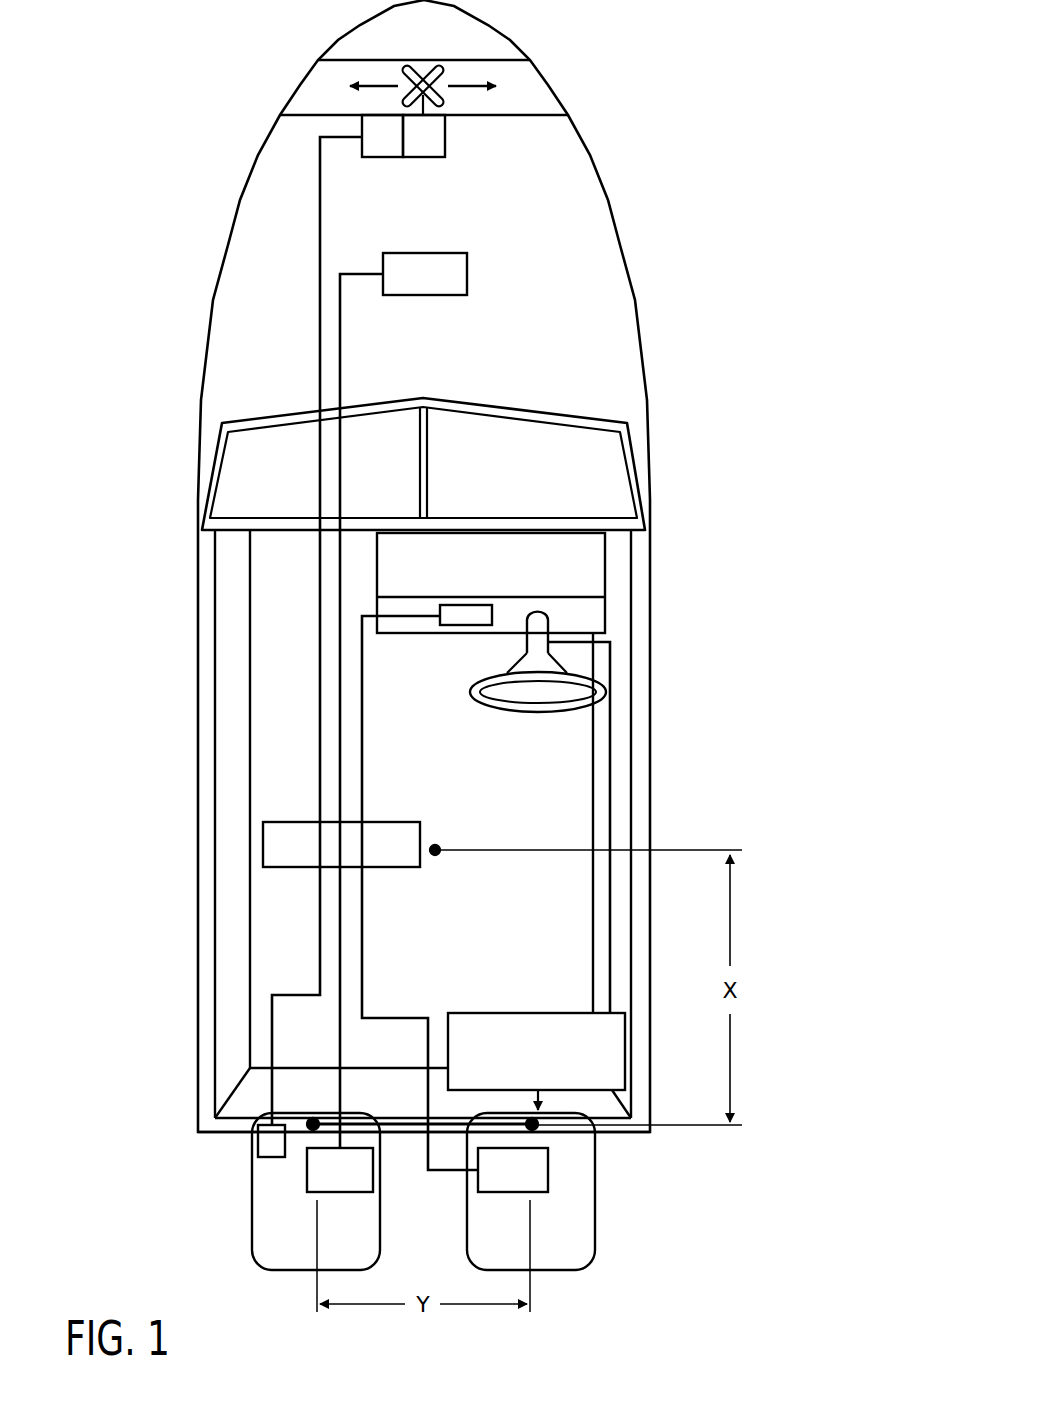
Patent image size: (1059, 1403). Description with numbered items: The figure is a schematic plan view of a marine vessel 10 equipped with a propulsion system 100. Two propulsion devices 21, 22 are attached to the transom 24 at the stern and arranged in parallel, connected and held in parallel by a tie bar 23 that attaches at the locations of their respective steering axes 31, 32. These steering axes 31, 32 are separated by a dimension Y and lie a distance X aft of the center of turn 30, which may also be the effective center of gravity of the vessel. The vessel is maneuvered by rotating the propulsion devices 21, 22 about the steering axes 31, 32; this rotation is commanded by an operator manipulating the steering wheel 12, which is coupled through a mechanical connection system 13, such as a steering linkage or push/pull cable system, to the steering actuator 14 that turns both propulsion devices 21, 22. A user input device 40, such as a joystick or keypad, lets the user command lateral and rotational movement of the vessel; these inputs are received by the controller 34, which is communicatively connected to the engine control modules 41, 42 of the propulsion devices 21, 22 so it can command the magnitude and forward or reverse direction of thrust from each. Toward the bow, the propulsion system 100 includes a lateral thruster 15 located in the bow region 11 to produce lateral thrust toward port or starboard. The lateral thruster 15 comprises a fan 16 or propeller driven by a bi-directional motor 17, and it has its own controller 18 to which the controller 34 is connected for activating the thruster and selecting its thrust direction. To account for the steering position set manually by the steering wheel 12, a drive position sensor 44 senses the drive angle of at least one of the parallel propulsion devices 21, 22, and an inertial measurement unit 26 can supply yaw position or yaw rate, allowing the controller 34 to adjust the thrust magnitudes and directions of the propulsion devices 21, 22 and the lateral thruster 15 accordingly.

The propulsion system 100 is at (686, 148).
The marine vessel 10 is at (625, 260).
The bow region 11 is at (560, 76).
The steering wheel 12 is at (540, 623).
The mechanical connection system 13 is at (613, 693).
The steering actuator 14 is at (493, 1012).
The lateral thruster 15 is at (476, 42).
The fan 16 is at (440, 97).
The bi-directional motor 17 is at (425, 158).
The controller for the lateral thruster 18 is at (382, 158).
The first propulsion device 21 is at (267, 1217).
The second propulsion device 22 is at (580, 1217).
The tie bar 23 is at (413, 1118).
The transom 24 is at (230, 1134).
The inertial measurement unit 26 is at (425, 296).
The center of turn 30 is at (438, 847).
The first steering axis 31 is at (313, 1118).
The second steering axis 32 is at (535, 1127).
The controller 34 is at (298, 822).
The user input device 40 is at (468, 604).
The first engine control module 41 is at (358, 1192).
The second engine control module 42 is at (497, 1192).
The drive position sensor 44 is at (272, 1158).